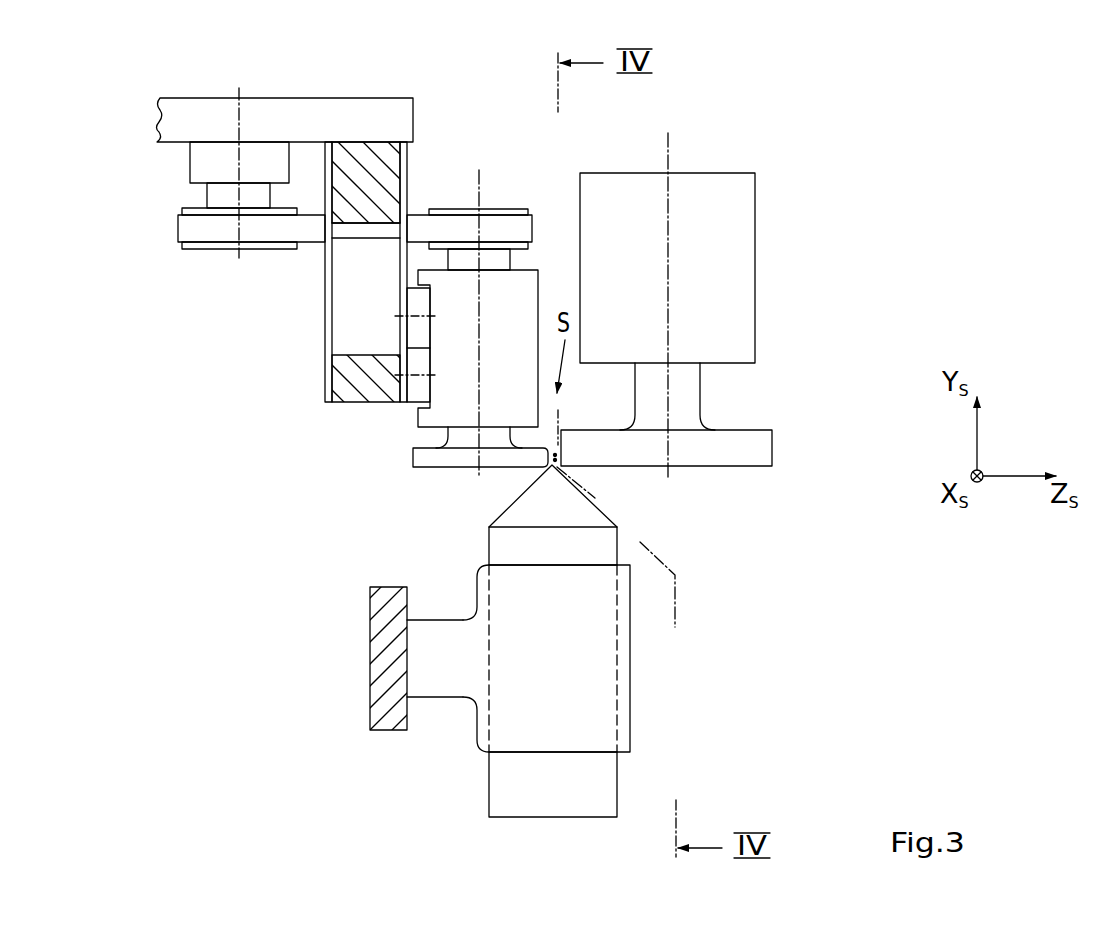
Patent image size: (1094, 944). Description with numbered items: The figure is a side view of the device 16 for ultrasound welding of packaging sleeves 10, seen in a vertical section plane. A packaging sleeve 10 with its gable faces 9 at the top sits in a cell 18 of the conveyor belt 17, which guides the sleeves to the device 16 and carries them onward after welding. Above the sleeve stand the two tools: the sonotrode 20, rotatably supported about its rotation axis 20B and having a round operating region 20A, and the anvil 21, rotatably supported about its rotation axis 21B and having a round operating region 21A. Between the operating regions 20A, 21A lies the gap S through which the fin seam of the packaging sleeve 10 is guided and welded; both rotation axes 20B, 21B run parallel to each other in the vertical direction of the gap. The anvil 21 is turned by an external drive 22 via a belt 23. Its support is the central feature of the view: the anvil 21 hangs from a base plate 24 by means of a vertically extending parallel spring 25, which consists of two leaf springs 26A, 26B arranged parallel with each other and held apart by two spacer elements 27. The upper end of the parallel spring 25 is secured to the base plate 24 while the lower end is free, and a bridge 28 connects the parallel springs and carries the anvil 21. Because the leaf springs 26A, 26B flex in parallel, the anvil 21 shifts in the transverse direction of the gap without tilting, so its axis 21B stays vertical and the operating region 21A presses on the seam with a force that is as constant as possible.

The gable faces 9 is at (535, 510).
The packaging sleeve 10 is at (503, 783).
The device 16 is at (802, 105).
The conveyor belt 17 is at (385, 682).
The cells 18 is at (430, 645).
The sonotrode 20 is at (730, 277).
The operating region of the sonotrode 20A is at (752, 447).
The rotation axis of the sonotrode 20B is at (669, 148).
The anvil 21 is at (453, 412).
The operating region of the anvil 21A is at (425, 458).
The rotation axis of the anvil 21B is at (481, 187).
The external drive 22 is at (208, 163).
The belt 23 is at (193, 228).
The base plate 24 is at (220, 113).
The parallel spring 25 is at (296, 334).
The leaf spring 26A is at (323, 167).
The leaf spring 26B is at (410, 167).
The spacer elements 27 is at (372, 155).
The bridge 28 is at (415, 305).